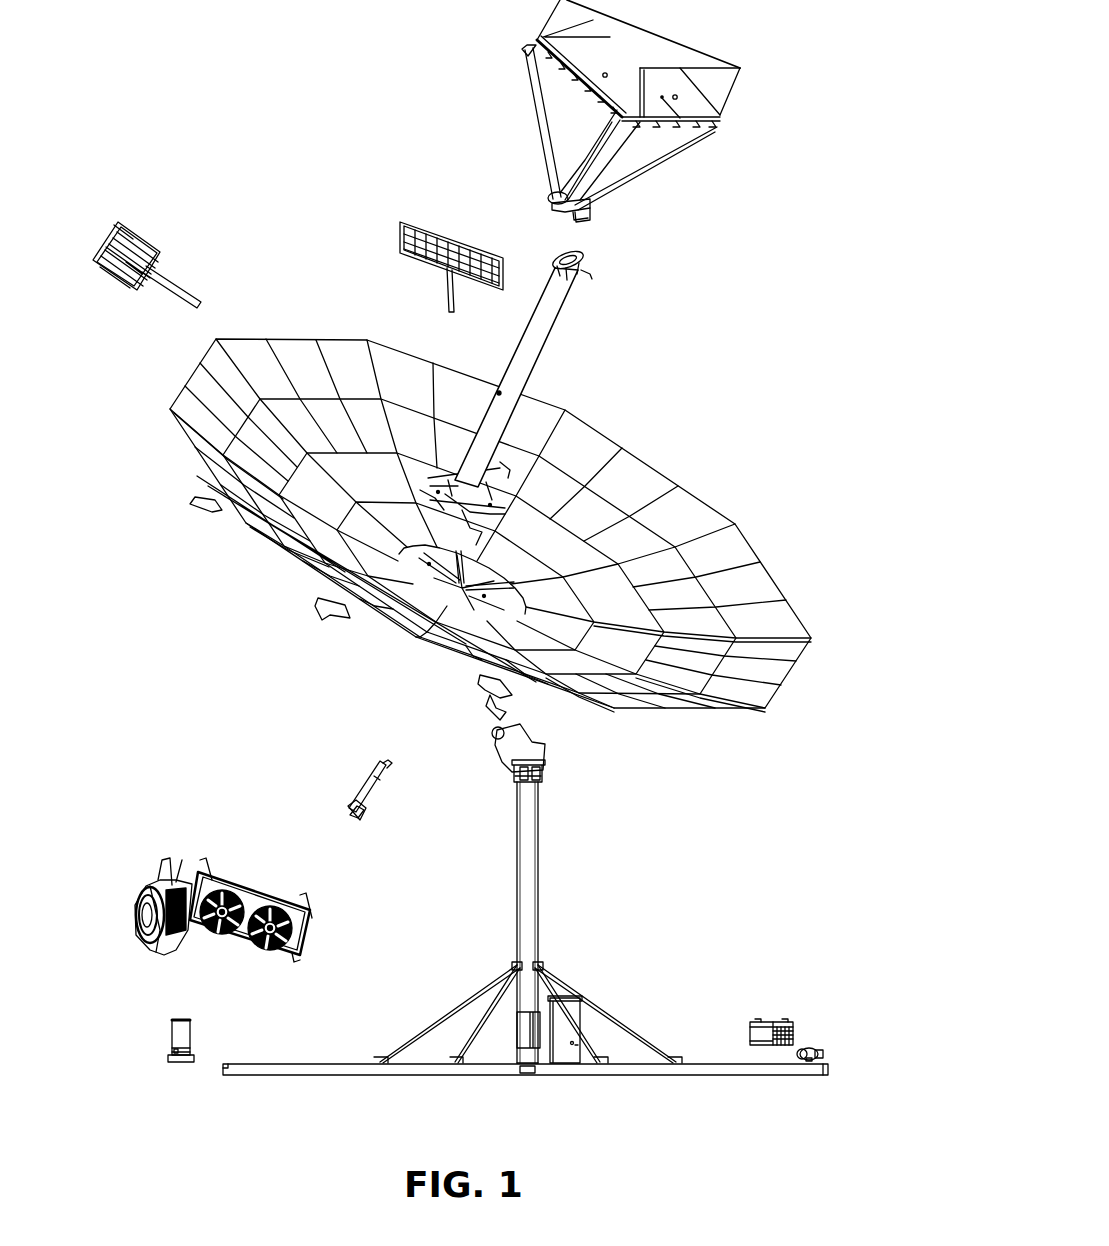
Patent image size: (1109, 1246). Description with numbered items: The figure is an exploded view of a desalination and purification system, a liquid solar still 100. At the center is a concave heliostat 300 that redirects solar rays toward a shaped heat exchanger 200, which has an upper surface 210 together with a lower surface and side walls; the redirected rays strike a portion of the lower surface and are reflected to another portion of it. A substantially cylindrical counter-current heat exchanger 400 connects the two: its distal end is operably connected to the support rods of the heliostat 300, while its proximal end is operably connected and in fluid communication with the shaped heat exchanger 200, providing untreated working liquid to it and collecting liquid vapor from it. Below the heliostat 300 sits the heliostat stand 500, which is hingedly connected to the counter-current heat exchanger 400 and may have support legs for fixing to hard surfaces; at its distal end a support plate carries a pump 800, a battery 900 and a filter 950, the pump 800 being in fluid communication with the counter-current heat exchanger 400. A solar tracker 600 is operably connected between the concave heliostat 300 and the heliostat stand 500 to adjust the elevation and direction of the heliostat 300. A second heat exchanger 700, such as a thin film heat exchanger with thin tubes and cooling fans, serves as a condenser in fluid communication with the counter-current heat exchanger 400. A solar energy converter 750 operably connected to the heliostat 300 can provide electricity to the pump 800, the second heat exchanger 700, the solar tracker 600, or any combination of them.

The solar still 100 is at (159, 367).
The shaped heat exchanger 200 is at (710, 132).
The upper surface 210 is at (657, 25).
The concave heliostat 300 is at (792, 640).
The counter-current heat exchanger 400 is at (523, 363).
The heliostat stand 500 is at (533, 883).
The solar tracker 600 is at (352, 789).
The second heat exchanger 700 is at (199, 870).
The solar energy converter 750 is at (400, 221).
The pump 800 is at (813, 1048).
The battery 900 is at (762, 1037).
The filter 950 is at (178, 1040).